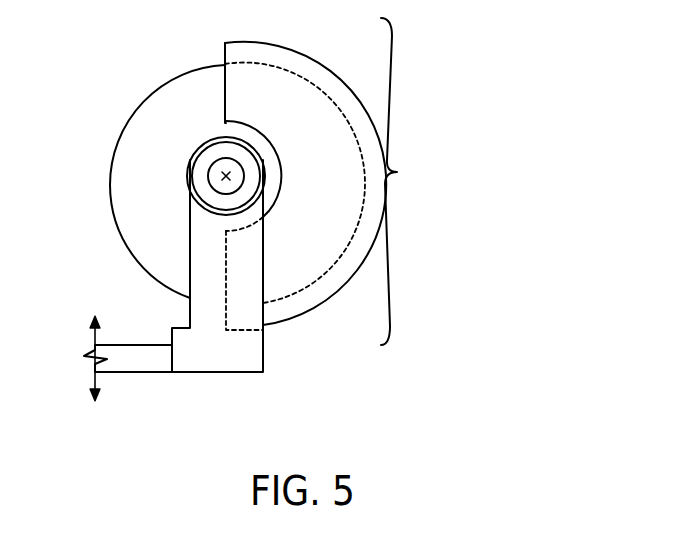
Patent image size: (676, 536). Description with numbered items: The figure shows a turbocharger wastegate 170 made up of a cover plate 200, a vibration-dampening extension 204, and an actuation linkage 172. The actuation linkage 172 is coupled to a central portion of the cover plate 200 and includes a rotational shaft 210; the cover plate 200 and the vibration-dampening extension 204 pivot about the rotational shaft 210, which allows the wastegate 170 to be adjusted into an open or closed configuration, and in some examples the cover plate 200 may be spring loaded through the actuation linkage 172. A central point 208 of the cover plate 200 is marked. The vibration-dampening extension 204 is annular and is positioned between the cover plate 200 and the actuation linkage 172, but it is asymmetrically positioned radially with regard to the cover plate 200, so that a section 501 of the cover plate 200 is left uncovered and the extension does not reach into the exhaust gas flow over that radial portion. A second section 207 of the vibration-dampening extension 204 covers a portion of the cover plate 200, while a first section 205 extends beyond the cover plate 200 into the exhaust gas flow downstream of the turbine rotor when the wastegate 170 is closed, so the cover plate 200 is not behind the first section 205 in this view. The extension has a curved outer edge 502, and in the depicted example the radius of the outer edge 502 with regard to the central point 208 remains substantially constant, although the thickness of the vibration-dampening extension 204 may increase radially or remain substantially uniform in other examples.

The turbocharger wastegate 170 is at (526, 164).
The actuation linkage 172 is at (220, 387).
The cover plate 200 is at (123, 130).
The vibration-dampening extension 204 is at (406, 181).
The first section 205 is at (271, 66).
The second section 207 is at (293, 127).
The central point 208 is at (226, 178).
The rotational shaft 210 is at (140, 358).
The section 501 is at (172, 196).
The outer edge 502 is at (325, 75).